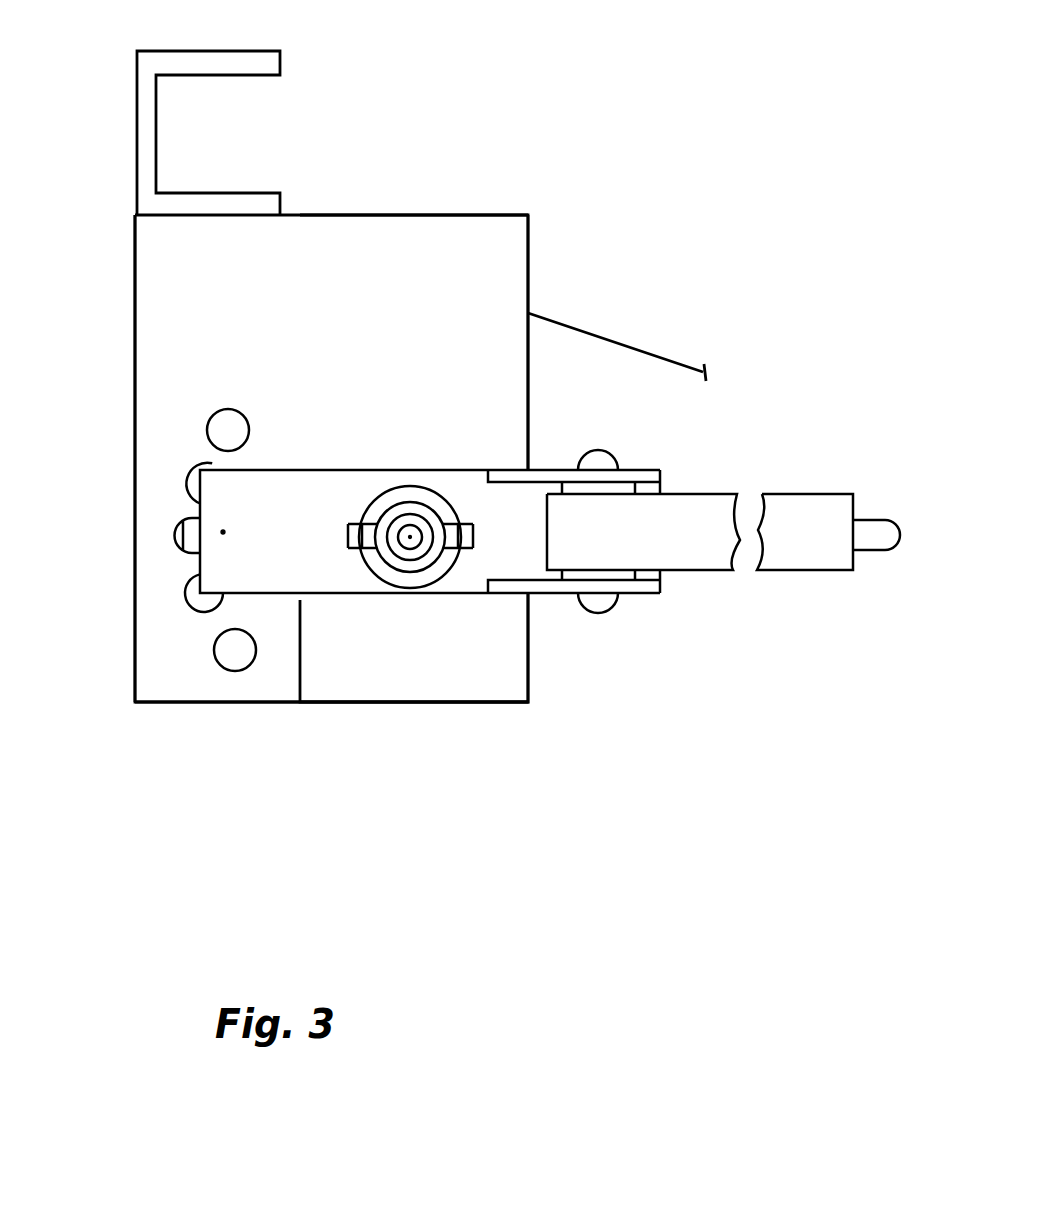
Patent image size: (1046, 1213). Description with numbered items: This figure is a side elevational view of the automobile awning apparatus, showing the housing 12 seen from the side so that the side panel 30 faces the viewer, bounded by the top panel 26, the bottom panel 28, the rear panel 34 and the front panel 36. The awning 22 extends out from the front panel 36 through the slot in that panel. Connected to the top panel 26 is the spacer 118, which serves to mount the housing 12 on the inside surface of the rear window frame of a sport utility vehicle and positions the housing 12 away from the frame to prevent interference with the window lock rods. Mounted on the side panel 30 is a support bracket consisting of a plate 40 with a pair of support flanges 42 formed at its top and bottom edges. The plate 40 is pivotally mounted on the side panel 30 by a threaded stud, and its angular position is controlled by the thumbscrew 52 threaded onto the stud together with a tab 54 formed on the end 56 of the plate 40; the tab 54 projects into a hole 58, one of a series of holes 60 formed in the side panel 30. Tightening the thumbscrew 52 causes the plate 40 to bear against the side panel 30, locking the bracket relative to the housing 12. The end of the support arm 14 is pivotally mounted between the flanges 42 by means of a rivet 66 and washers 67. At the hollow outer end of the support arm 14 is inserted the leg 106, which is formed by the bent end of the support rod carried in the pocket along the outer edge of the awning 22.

The housing 12 is at (407, 215).
The support arm 14 is at (707, 552).
The awning 22 is at (672, 358).
The top panel 26 is at (495, 215).
The bottom panel 28 is at (450, 703).
The side panel 30 is at (498, 668).
The rear panel 34 is at (135, 300).
The front panel 36 is at (530, 255).
The plate 40 is at (317, 578).
The support flanges 42 is at (662, 470).
The thumbscrew 52 is at (377, 563).
The tab 54 is at (172, 540).
The end of the plate 56 is at (223, 532).
The hole 58 is at (193, 537).
The holes 60 is at (207, 430).
The rivet 66 is at (603, 452).
The washers 67 is at (638, 487).
The leg 106 is at (872, 542).
The spacer 118 is at (283, 62).